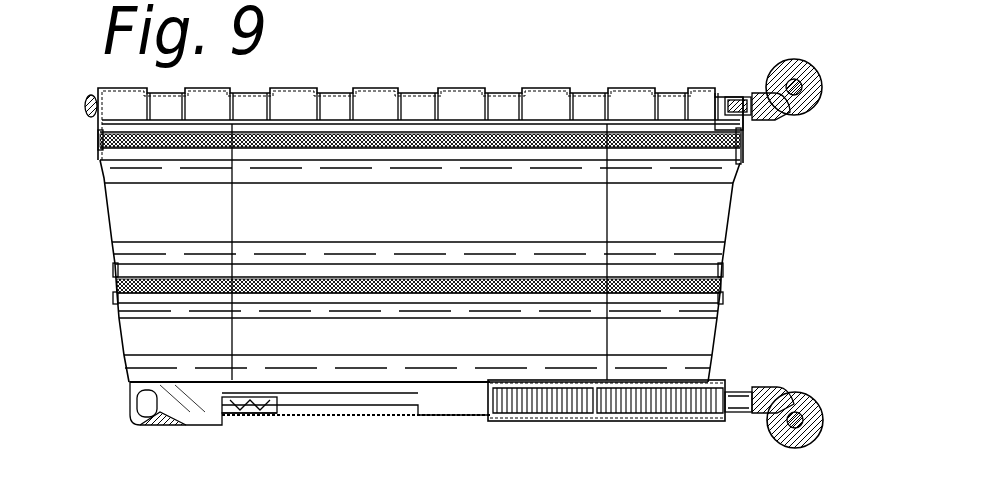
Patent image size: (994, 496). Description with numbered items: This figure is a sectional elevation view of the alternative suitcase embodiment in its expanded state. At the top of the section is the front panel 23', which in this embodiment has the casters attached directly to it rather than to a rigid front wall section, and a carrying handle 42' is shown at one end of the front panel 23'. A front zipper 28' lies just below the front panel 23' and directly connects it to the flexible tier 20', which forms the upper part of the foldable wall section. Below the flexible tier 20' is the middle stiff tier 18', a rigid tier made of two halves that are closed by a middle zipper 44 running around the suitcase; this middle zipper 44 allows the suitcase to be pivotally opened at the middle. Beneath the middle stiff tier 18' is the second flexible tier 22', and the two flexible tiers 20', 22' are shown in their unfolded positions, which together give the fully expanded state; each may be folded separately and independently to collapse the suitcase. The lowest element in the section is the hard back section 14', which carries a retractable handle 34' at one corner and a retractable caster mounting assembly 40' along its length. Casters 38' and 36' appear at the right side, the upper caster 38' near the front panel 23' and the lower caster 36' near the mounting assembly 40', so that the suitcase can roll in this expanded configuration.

The carrying handle 42' is at (65, 85).
The front zipper 28' is at (386, 148).
The front panel 23' is at (420, 94).
The caster 38' is at (781, 65).
The flexible tier 20' is at (454, 253).
The middle stiff tier 18' is at (376, 264).
The middle zipper 44 is at (117, 283).
The flexible tier 22' is at (461, 337).
The caster 36' is at (780, 390).
The retractable handle 34' is at (104, 416).
The back section 14' is at (310, 437).
The retractable caster mounting assembly 40' is at (606, 438).